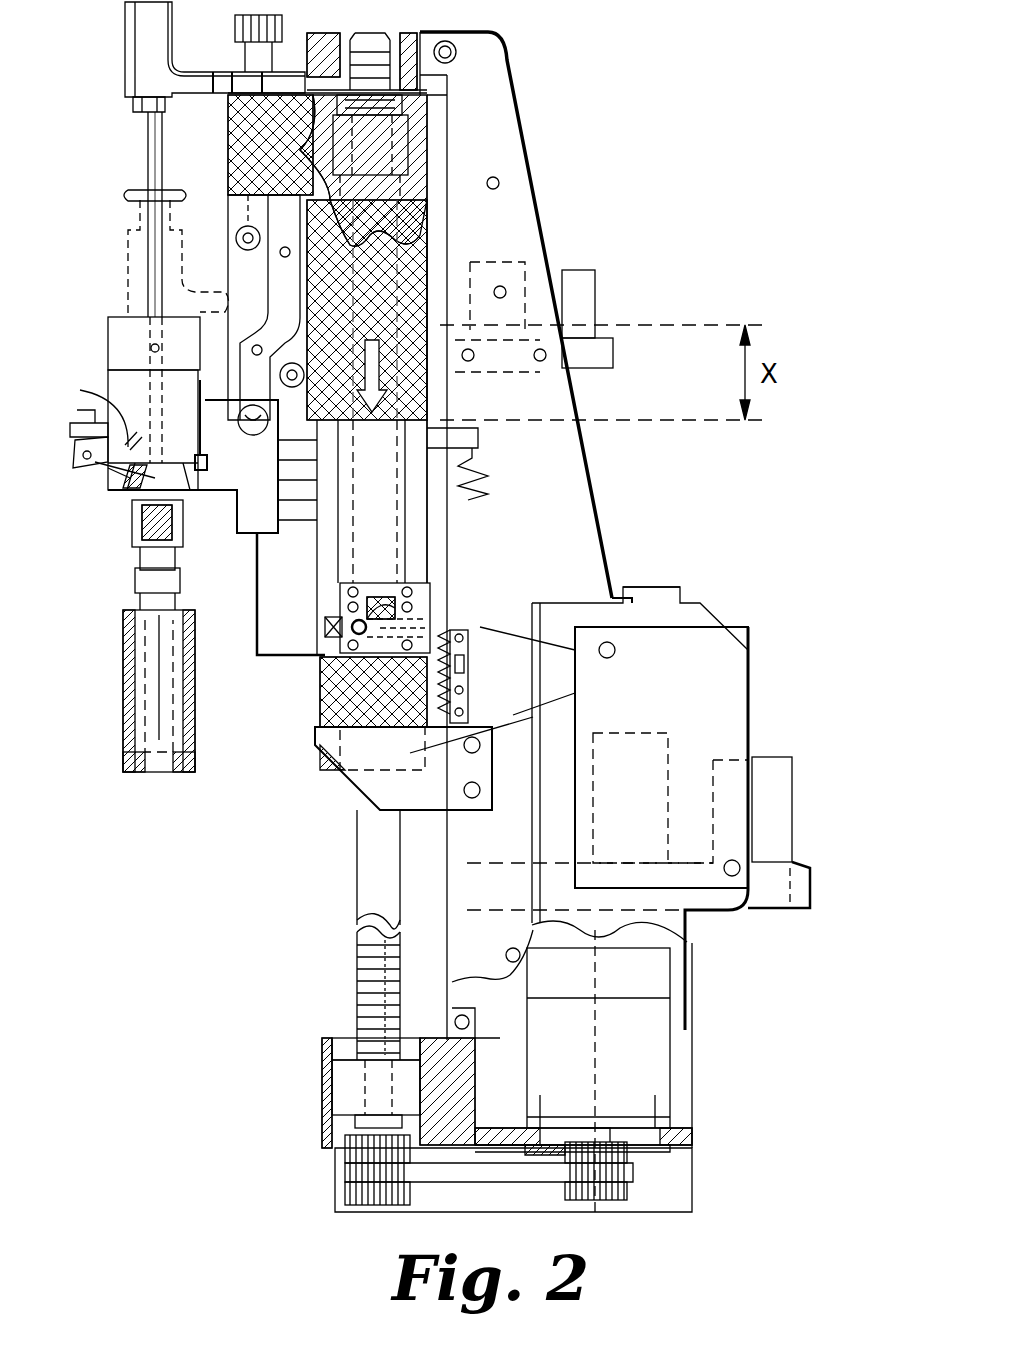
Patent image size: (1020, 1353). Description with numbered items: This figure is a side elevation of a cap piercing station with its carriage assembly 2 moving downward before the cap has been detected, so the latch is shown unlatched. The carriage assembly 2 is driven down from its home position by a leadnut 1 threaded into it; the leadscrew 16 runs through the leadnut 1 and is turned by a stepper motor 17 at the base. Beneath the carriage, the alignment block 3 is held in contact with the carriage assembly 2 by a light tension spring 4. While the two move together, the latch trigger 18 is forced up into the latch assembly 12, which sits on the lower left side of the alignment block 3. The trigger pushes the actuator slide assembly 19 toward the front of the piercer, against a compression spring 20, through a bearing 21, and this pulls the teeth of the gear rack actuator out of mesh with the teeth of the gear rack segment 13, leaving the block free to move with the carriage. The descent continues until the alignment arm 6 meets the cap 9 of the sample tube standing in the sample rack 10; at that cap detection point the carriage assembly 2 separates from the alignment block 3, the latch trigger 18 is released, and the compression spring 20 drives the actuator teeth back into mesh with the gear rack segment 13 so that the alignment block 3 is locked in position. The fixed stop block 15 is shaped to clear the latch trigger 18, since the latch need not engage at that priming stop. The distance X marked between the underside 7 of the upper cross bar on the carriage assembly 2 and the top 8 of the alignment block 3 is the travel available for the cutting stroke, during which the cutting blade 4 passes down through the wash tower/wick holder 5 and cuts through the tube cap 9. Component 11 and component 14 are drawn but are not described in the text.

The leadnut 1 is at (440, 165).
The carriage assembly 2 is at (440, 240).
The alignment block 3 is at (268, 660).
The tension spring 4 is at (140, 222).
The wash tower/wick holder 5 is at (110, 355).
The alignment arm 6 is at (105, 480).
The underside of the upper cross bar 7 is at (497, 328).
The top of the alignment block 8 is at (435, 385).
The cap 9 is at (135, 530).
The sample rack 10 is at (135, 585).
The cylinder 11 is at (123, 698).
The latch assembly 12 is at (430, 593).
The gear rack segment 13 is at (437, 653).
The bracket 14 is at (612, 580).
The stop block 15 is at (336, 780).
The leadscrew 16 is at (355, 988).
The stepper motor 17 is at (690, 1045).
The latch trigger 18 is at (320, 700).
The actuator slide assembly 19 is at (470, 668).
The compression spring 20 is at (325, 625).
The bearing 21 is at (427, 632).